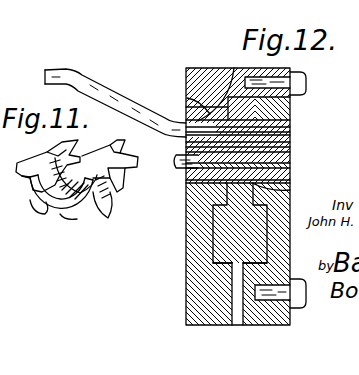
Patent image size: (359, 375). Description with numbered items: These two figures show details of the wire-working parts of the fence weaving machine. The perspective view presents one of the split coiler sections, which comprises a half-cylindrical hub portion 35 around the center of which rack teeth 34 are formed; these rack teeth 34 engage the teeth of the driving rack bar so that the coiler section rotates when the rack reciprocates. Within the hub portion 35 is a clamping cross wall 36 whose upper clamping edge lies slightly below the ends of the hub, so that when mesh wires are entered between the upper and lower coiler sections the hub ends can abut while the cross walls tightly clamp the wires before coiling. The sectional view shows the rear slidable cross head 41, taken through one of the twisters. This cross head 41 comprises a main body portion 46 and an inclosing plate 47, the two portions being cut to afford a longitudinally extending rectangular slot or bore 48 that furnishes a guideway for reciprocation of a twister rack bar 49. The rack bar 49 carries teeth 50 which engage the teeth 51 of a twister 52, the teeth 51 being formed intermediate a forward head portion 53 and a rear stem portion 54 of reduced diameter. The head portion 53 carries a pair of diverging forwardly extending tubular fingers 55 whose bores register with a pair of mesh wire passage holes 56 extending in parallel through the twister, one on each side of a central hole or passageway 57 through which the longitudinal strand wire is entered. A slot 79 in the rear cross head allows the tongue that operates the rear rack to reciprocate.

In FIG. 11, the rack teeth 34 is at (107, 206).
In FIG. 11, the half-cylindrical hub portion 35 is at (56, 212).
In FIG. 11, the clamping cross wall 36 is at (82, 174).
In FIG. 12, the rear slidable cross head 41 is at (232, 160).
In FIG. 12, the main body portion 46 is at (187, 206).
In FIG. 12, the inclosing plate 47 is at (292, 235).
In FIG. 12, the rectangular slot or bore 48 is at (212, 262).
In FIG. 12, the twister rack bar 49 is at (212, 243).
In FIG. 12, the teeth 50 is at (291, 180).
In FIG. 12, the teeth 51 is at (233, 68).
In FIG. 12, the twister 52 is at (291, 138).
In FIG. 12, the forward head portion 53 is at (187, 98).
In FIG. 12, the rear stem portion 54 is at (292, 123).
In FIG. 12, the tubular fingers 55 is at (109, 96).
In FIG. 12, the mesh wire passage holes 56 is at (292, 129).
In FIG. 12, the central hole or passageway 57 is at (292, 147).
In FIG. 12, the slot 79 is at (240, 298).